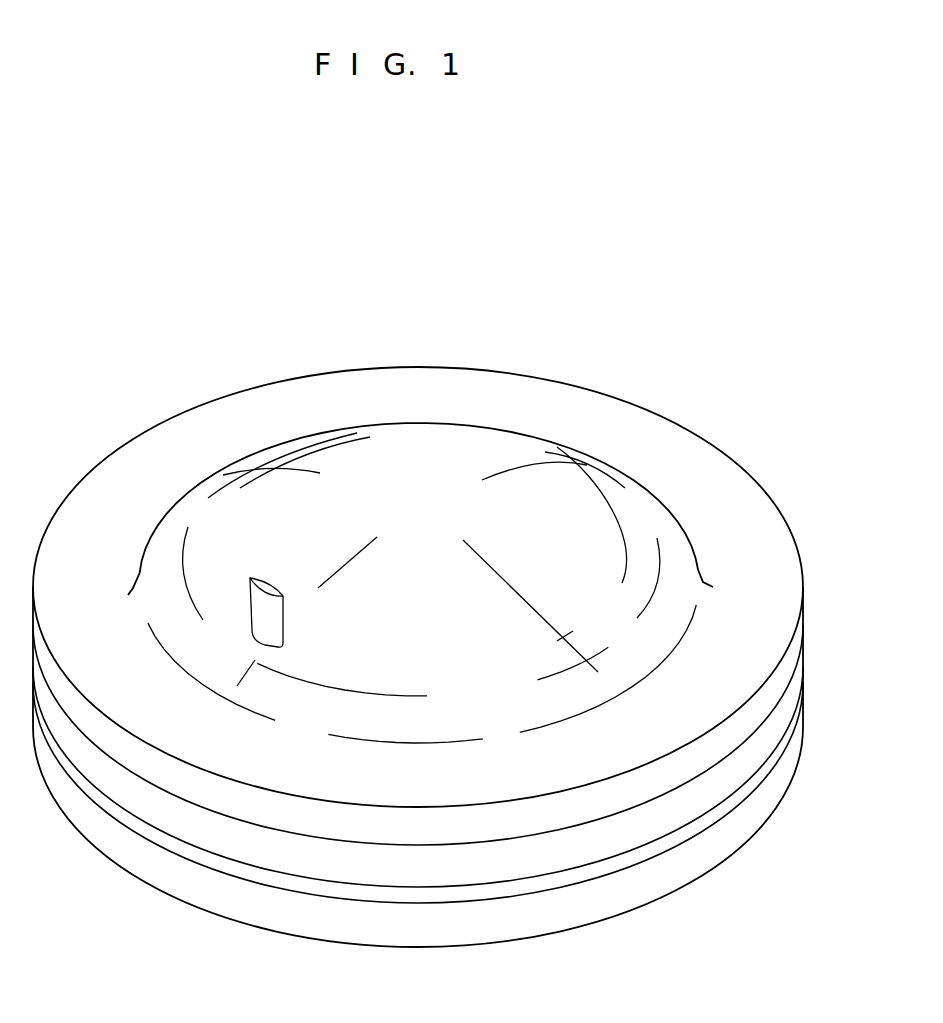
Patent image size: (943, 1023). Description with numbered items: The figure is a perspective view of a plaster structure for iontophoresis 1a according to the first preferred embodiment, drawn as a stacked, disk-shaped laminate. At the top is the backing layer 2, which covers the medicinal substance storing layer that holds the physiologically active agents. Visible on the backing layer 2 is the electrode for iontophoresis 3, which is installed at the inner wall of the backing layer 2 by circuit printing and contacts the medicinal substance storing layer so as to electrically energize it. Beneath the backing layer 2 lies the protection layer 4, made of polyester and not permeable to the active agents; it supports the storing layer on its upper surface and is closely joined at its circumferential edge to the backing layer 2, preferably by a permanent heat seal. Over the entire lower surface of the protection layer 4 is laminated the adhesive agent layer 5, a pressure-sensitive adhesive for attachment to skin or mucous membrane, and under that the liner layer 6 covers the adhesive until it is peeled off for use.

The plaster structure for iontophoresis 1a is at (447, 644).
The backing layer 2 is at (770, 552).
The electrode for iontophoresis 3 is at (263, 602).
The protection layer 4 is at (792, 697).
The adhesive agent layer 5 is at (745, 790).
The liner layer 6 is at (657, 880).